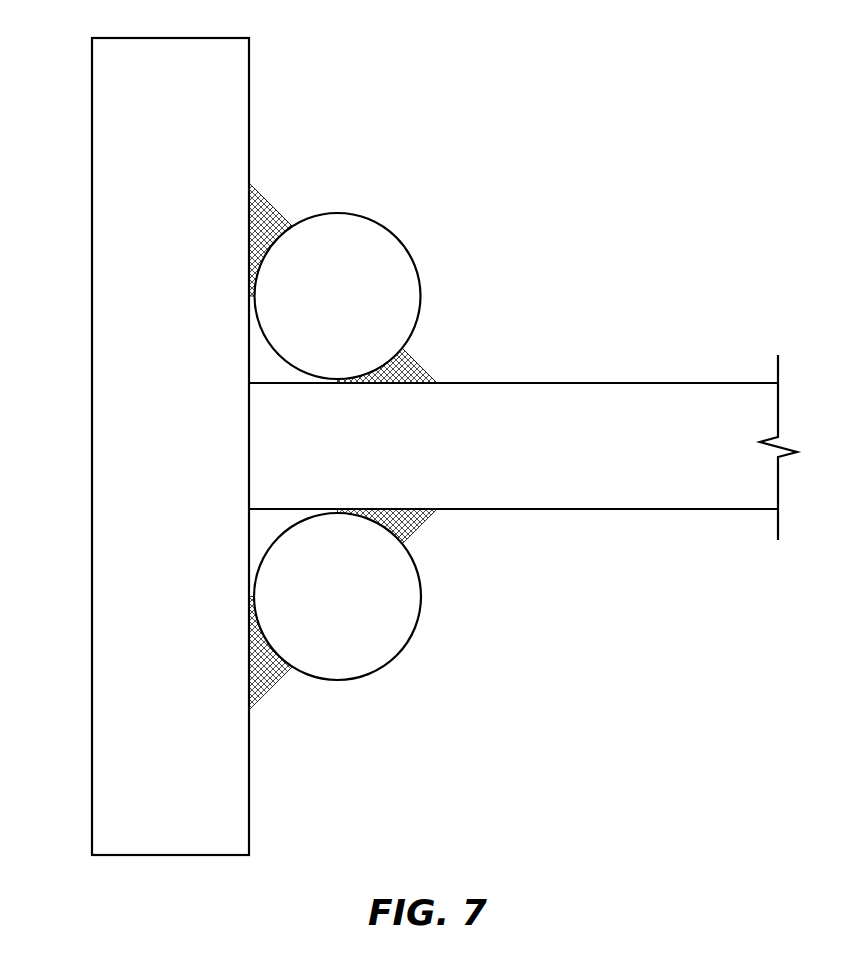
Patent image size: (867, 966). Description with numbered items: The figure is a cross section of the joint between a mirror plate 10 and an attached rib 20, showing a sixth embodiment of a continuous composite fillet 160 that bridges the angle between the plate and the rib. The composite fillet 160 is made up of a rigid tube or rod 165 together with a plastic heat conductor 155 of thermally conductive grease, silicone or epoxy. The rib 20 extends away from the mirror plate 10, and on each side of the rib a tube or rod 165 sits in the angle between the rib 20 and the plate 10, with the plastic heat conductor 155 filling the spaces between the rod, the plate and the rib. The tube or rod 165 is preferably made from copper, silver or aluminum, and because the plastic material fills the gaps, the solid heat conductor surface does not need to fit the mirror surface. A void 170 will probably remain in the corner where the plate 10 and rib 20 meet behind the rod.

The mirror plate 10 is at (115, 784).
The rib 20 is at (560, 495).
The plastic heat conductor 155 is at (418, 368).
The composite fillet 160 is at (412, 672).
The rigid tube or rod 165 is at (336, 214).
The void 170 is at (262, 361).